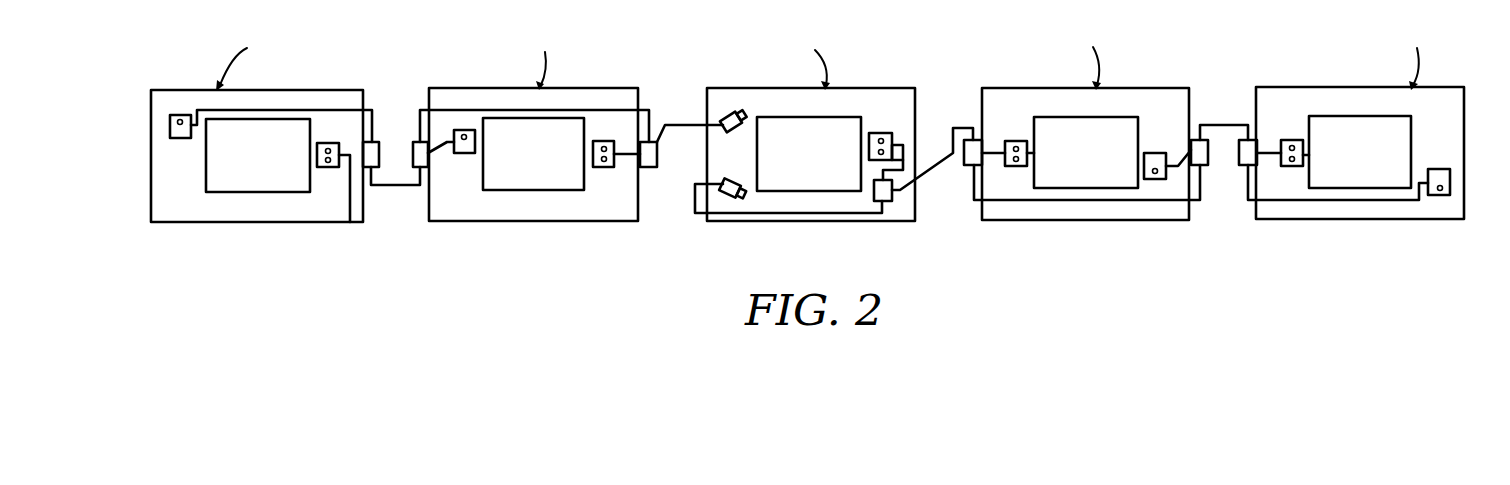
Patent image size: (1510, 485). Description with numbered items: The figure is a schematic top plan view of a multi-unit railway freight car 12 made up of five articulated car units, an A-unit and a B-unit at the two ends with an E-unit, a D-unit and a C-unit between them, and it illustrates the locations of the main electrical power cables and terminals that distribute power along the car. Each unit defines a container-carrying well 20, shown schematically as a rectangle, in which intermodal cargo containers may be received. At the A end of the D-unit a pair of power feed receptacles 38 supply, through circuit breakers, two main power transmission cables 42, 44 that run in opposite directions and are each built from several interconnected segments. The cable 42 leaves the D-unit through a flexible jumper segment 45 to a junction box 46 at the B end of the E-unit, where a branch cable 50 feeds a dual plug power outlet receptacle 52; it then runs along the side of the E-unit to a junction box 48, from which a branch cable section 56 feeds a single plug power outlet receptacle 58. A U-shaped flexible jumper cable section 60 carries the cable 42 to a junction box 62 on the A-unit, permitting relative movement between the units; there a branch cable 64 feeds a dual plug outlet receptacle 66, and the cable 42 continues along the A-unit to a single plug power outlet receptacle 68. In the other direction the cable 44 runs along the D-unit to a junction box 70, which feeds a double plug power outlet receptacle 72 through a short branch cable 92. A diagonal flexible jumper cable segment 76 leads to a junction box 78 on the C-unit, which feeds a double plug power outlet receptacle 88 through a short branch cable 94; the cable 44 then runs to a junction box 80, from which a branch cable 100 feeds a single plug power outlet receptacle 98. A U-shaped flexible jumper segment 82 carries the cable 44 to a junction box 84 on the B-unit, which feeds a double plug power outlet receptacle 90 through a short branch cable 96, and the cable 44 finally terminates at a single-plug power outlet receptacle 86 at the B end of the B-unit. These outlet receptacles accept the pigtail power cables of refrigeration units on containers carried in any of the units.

The multi-unit railway freight car 12 is at (867, 55).
The container-carrying well 20 is at (263, 180).
The power feed receptacles 38 is at (747, 117).
The main power transmission cable 42 is at (312, 108).
The main power transmission cable 44 is at (773, 213).
The flexible jumper segment 45 is at (696, 125).
The junction box 46 is at (658, 163).
The junction box 48 is at (408, 142).
The branch cable 50 is at (630, 153).
The dual plug power outlet receptacle 52 is at (603, 167).
The branch cable section 56 is at (440, 152).
The single plug power outlet receptacle 58 is at (467, 132).
The flexible jumper cable section 60 is at (397, 185).
The junction box 62 is at (375, 142).
The branch cable 64 is at (352, 157).
The dual plug outlet receptacle 66 is at (327, 167).
The single plug power outlet receptacle 68 is at (185, 115).
The junction box 70 is at (897, 202).
The double plug power outlet receptacle 72 is at (886, 133).
The flexible jumper cable segment 76 is at (918, 177).
The junction box 78 is at (965, 167).
The junction box 80 is at (1203, 168).
The flexible jumper segment 82 is at (1229, 125).
The junction box 84 is at (1243, 167).
The single-plug power outlet receptacle 86 is at (1447, 195).
The double plug power outlet receptacle 88 is at (1035, 155).
The double plug power outlet receptacle 90 is at (1310, 155).
The short branch cable 92 is at (905, 158).
The short branch cable 94 is at (992, 150).
The short branch cable 96 is at (1268, 152).
The single plug power outlet receptacle 98 is at (1158, 153).
The branch cable 100 is at (1180, 167).